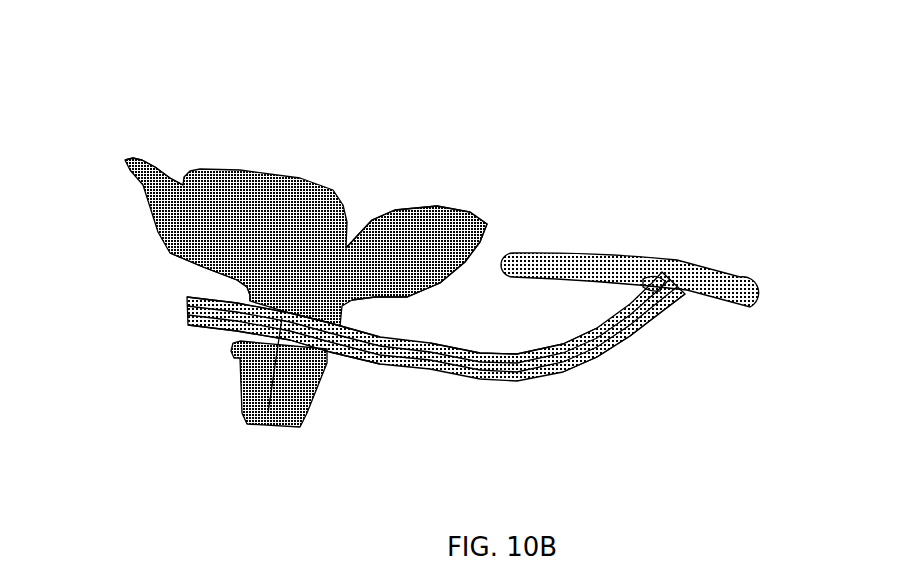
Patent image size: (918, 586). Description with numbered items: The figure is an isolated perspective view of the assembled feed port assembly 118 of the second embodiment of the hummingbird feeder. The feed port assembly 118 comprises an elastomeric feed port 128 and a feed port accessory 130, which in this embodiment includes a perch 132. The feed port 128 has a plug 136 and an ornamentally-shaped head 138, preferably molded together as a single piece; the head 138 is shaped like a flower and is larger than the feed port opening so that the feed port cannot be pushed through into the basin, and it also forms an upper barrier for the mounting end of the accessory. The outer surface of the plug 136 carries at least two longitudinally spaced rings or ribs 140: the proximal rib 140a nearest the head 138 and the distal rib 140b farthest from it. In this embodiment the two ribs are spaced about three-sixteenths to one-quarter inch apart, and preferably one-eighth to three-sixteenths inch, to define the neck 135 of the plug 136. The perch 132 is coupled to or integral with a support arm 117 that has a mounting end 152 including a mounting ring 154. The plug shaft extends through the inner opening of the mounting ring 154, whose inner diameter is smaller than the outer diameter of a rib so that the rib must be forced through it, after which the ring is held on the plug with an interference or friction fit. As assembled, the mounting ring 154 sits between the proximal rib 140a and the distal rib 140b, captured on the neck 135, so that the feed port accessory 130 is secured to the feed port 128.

The feed port assembly 118 is at (176, 130).
The feed port 128 is at (425, 180).
The ornamentally-shaped head 138 is at (460, 208).
The perch 132 is at (617, 260).
The mounting end 152 is at (186, 297).
The neck 135 is at (228, 333).
The ribs 140 is at (222, 346).
The proximal rib 140a is at (335, 314).
The distal rib 140b is at (323, 363).
The support arm 117 is at (512, 353).
The feed port accessory 130 is at (623, 366).
The plug 136 is at (240, 383).
The mounting ring 154 is at (268, 413).